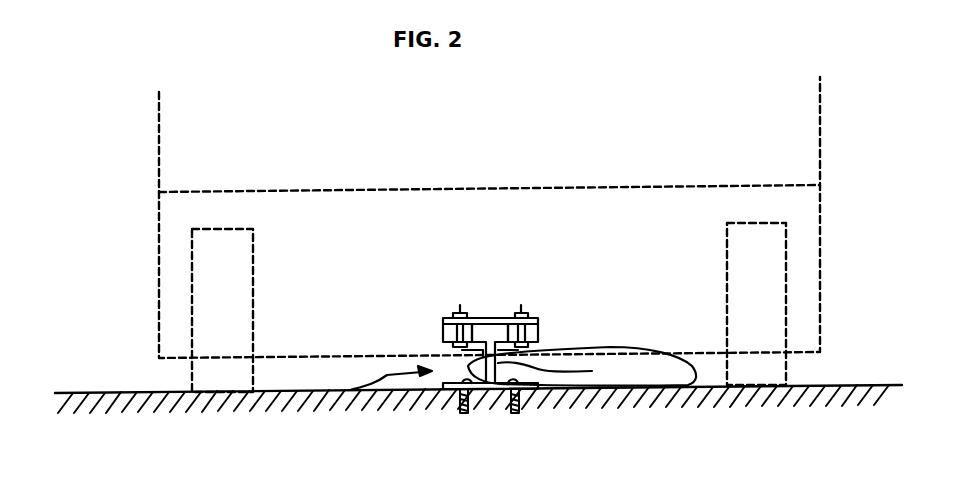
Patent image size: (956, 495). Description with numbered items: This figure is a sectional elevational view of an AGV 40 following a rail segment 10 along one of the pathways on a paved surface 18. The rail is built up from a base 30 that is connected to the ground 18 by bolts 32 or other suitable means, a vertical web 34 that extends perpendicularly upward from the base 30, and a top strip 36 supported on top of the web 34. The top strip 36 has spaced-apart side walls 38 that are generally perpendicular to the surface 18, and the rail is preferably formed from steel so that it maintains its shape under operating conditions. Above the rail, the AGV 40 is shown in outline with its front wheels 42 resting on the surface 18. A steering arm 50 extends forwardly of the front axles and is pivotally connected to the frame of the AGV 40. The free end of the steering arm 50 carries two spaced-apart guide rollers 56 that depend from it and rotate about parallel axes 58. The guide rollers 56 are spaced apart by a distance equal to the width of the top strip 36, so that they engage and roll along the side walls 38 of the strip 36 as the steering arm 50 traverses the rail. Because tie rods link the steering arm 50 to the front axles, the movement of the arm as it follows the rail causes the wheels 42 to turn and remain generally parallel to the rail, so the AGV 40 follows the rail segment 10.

The rail segment 10 is at (350, 390).
The paved surface 18 is at (182, 410).
The base 30 is at (523, 393).
The bolts 32 is at (515, 413).
The vertical web 34 is at (582, 366).
The top strip 36 is at (495, 320).
The side walls 38 is at (488, 320).
The AGV 40 is at (598, 200).
The front wheels 42 is at (237, 302).
The steering arm 50 is at (483, 320).
The guide rollers 56 is at (443, 330).
The parallel axes 58 is at (455, 352).